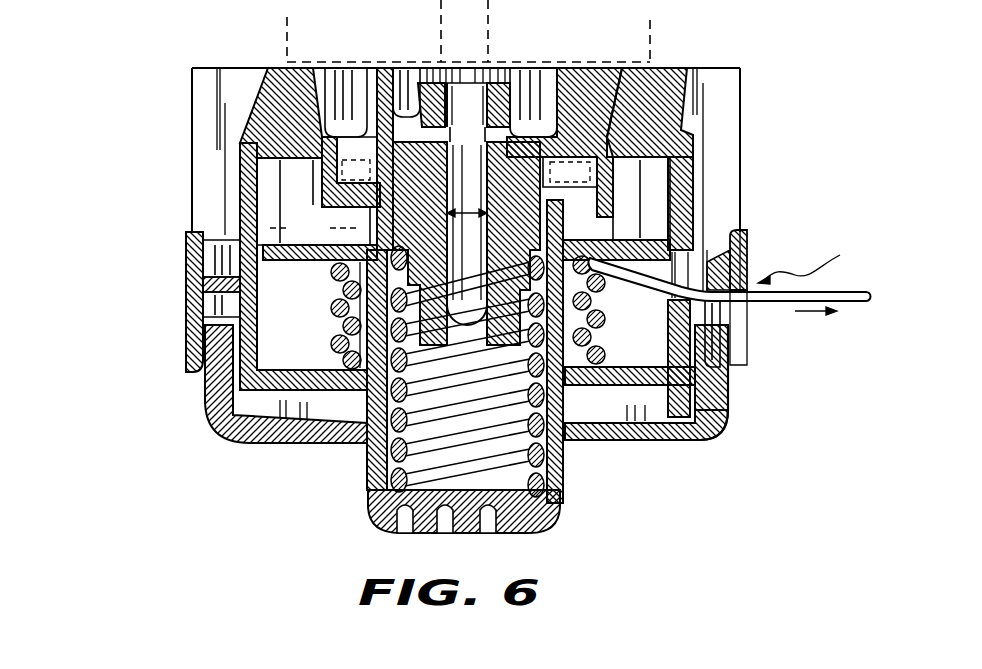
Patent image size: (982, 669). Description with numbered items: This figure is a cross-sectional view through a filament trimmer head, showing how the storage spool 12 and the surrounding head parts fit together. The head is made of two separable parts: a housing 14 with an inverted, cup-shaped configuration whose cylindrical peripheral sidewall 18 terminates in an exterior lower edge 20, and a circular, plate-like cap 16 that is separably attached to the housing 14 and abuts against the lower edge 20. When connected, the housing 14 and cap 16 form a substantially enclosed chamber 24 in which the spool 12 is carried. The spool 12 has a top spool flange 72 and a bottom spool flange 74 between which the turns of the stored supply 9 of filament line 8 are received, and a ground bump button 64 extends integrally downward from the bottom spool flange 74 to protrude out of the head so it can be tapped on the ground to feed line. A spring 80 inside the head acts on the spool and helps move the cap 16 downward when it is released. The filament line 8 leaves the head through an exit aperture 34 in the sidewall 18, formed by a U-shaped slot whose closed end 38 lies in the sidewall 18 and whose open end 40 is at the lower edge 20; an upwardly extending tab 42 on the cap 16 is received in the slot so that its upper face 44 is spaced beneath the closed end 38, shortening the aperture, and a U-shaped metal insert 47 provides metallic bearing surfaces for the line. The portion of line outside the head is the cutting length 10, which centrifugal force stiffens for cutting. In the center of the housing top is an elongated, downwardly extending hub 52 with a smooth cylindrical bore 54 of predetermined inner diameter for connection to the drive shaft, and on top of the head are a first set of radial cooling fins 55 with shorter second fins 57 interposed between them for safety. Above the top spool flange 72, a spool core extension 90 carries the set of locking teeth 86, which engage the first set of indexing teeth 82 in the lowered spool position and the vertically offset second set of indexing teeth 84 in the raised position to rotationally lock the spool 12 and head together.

The filament line 8 is at (630, 283).
The supply of filament line 9 is at (315, 318).
The cutting length of line 10 is at (862, 290).
The storage spool 12 is at (660, 215).
The housing 14 is at (187, 250).
The cap 16 is at (728, 425).
The peripheral sidewall 18 is at (186, 270).
The lower edge 20 is at (190, 381).
The chamber 24 is at (292, 186).
The exit aperture 34 is at (815, 262).
The closed end 38 is at (713, 267).
The open end 40 is at (738, 372).
The tab 42 is at (715, 352).
The upper face 44 is at (712, 312).
The U-shaped metal insert 47 is at (745, 262).
The hub 52 is at (513, 167).
The cylindrical bore 54 is at (466, 145).
The first set of radial cooling fins 55 is at (720, 97).
The second set of radial fins 57 is at (648, 107).
The ground bump button 64 is at (370, 508).
The top spool flange 72 is at (240, 308).
The bottom spool flange 74 is at (603, 378).
The spring 80 is at (393, 450).
The first set of indexing teeth 82 is at (605, 185).
The second set of indexing teeth 84 is at (585, 155).
The set of locking teeth 86 is at (362, 155).
The spool core extension 90 is at (330, 216).